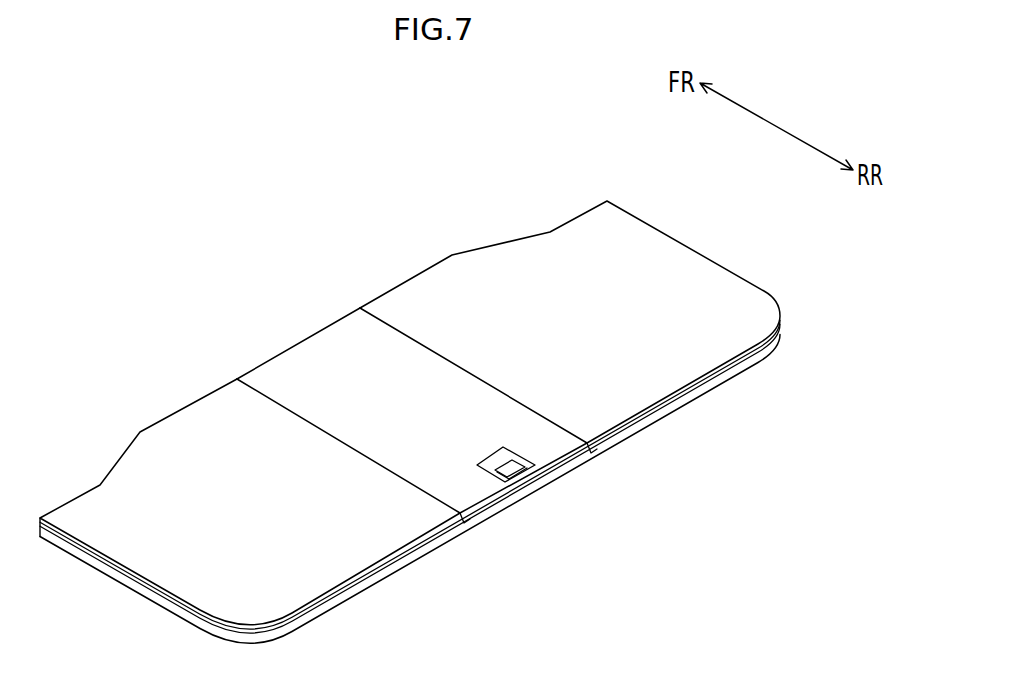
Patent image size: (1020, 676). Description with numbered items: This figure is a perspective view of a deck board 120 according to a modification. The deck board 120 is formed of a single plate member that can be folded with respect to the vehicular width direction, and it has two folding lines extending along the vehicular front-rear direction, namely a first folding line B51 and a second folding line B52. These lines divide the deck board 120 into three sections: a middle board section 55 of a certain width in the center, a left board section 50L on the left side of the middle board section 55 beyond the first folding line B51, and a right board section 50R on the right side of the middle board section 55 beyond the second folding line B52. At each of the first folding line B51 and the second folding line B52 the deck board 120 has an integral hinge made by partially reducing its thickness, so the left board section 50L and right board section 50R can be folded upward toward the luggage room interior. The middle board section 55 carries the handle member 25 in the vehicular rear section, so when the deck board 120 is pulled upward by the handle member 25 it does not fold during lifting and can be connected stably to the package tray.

The deck board 120 is at (668, 252).
The left board section 50L is at (320, 543).
The right board section 50R is at (663, 343).
The middle board section 55 is at (422, 452).
The handle member 25 is at (503, 450).
The first folding line B51 is at (373, 463).
The second folding line B52 is at (517, 395).